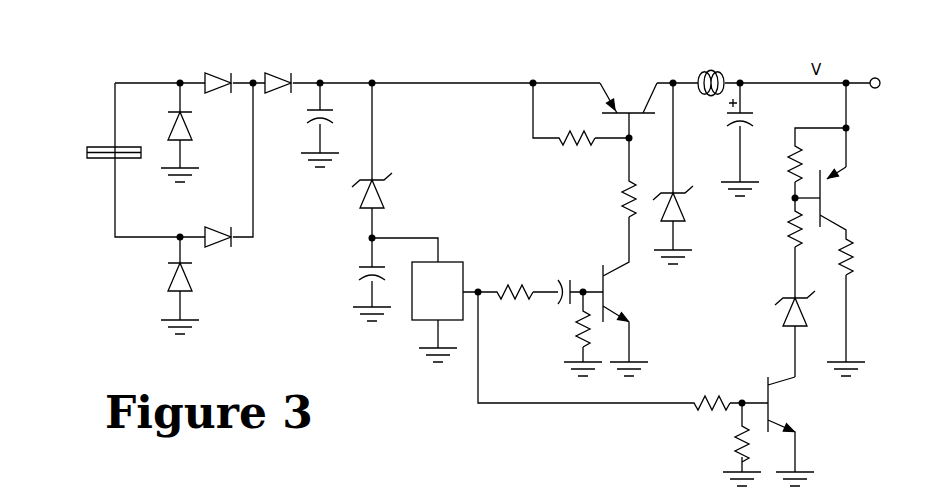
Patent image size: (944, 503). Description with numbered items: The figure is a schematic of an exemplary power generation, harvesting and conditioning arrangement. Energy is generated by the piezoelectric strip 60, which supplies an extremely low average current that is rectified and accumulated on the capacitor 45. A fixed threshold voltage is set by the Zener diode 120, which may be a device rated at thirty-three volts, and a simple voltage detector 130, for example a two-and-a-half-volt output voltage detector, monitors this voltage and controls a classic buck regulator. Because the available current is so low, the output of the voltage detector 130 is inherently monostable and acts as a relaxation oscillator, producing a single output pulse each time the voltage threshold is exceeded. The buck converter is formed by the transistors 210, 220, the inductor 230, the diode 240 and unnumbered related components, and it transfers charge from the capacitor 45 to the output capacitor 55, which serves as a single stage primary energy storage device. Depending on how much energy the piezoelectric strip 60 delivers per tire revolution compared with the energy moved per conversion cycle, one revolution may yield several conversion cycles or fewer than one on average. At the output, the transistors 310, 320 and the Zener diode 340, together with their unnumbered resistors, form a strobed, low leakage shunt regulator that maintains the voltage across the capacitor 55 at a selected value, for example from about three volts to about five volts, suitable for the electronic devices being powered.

The piezoelectric strip 60 is at (104, 147).
The capacitor 45 is at (327, 109).
The Zener diode 120 is at (383, 178).
The voltage detector 130 is at (445, 262).
The transistor 210 is at (638, 274).
The transistor 220 is at (649, 100).
The inductor 230 is at (705, 70).
The diode 240 is at (685, 195).
The capacitor 55 is at (746, 112).
The transistor 320 is at (839, 176).
The Zener diode 340 is at (782, 320).
The transistor 310 is at (791, 388).